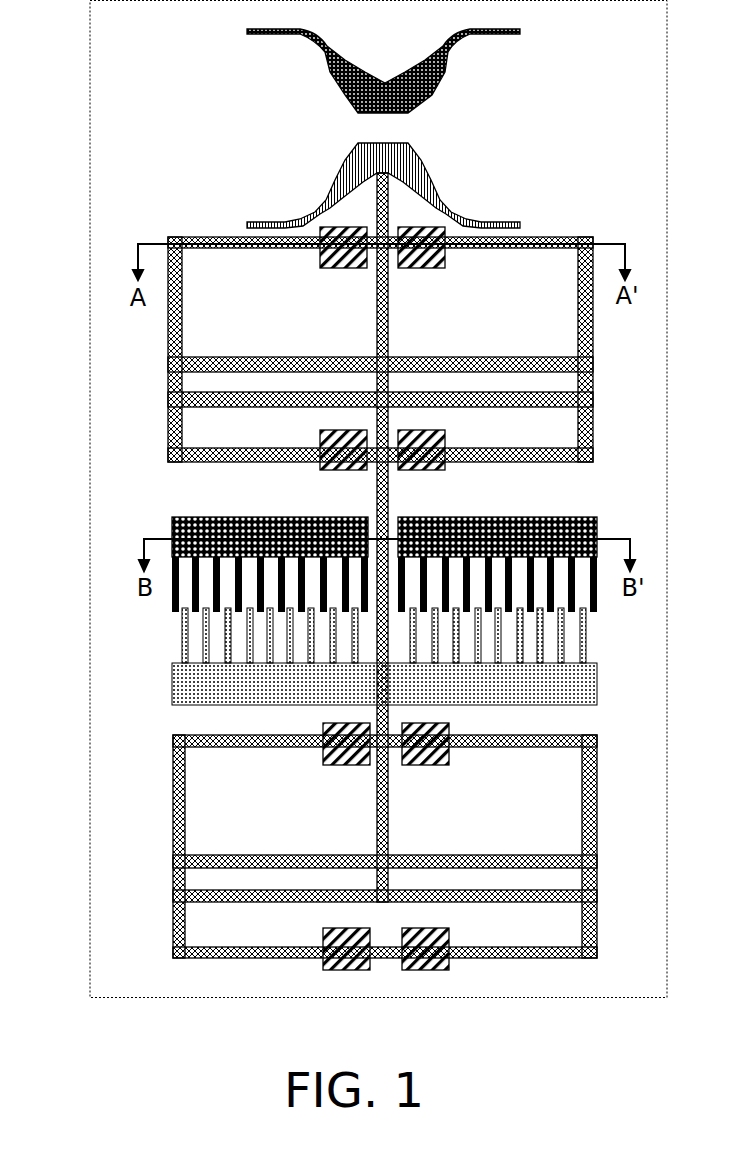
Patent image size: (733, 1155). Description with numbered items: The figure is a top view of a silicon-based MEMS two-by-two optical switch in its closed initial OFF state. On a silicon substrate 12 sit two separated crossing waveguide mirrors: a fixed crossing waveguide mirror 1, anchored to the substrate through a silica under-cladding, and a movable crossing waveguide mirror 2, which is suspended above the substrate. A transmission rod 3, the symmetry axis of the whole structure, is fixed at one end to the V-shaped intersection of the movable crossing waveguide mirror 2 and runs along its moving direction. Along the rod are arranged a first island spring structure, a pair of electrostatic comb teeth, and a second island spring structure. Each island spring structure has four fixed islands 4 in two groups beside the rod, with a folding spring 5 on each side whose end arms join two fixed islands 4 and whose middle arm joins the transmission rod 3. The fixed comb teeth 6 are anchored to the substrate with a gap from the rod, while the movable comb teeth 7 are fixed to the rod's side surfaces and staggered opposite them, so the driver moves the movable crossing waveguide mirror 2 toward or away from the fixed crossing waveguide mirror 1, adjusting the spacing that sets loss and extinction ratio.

The fixed crossing waveguide mirror 1 is at (333, 75).
The movable crossing waveguide mirror 2 is at (343, 178).
The transmission rod 3 is at (377, 310).
The fixed island 4 is at (318, 262).
The folding spring 5 is at (170, 344).
The fixed comb teeth 6 is at (205, 515).
The movable comb teeth 7 is at (210, 702).
The silicon substrate 12 is at (138, 68).